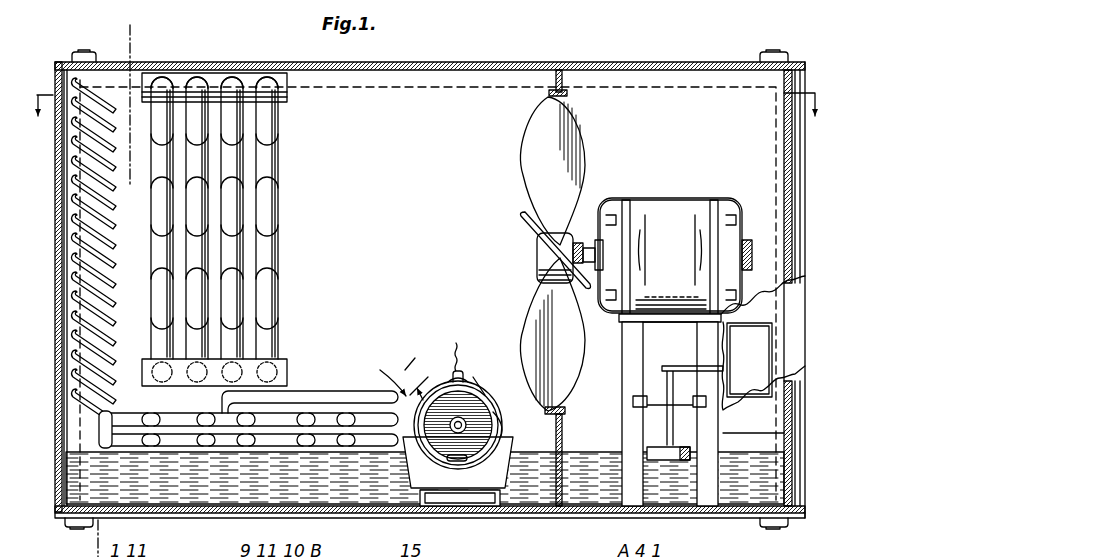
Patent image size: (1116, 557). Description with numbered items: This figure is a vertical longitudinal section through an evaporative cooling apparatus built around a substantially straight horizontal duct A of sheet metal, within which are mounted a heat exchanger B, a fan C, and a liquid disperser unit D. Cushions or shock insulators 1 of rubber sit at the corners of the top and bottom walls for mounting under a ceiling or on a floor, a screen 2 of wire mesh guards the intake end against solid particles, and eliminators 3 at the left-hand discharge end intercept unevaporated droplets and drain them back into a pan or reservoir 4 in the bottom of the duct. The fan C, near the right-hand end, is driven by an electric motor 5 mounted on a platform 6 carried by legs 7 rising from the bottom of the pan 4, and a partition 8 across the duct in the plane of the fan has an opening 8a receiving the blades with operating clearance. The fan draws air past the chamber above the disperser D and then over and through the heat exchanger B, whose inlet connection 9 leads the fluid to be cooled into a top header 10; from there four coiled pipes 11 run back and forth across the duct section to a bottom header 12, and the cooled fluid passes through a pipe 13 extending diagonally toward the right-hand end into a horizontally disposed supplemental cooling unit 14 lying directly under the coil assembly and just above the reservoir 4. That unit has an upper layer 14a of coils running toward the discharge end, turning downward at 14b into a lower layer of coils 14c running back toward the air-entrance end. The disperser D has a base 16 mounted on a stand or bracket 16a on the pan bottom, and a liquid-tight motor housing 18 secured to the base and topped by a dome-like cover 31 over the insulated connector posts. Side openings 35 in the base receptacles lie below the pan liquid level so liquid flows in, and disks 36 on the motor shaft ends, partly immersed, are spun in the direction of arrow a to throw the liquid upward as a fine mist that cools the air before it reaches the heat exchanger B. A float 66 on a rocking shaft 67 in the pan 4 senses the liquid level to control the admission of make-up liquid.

The duct A is at (612, 58).
The heat exchanger B is at (222, 206).
The fan C is at (540, 136).
The liquid disperser unit D is at (458, 425).
The cushions or shock insulators 1 is at (70, 60).
The screen 2 is at (786, 150).
The eliminators 3 is at (140, 42).
The pan or reservoir 4 is at (72, 478).
The electric motor 5 is at (700, 212).
The platform 6 is at (640, 356).
The legs 7 is at (664, 348).
The partition 8 is at (564, 80).
The opening 8a is at (548, 94).
The inlet connection 9 is at (222, 72).
The top header 10 is at (179, 77).
The pipes 11 is at (192, 305).
The bottom header 12 is at (288, 364).
The pipe 13 is at (331, 396).
The supplemental heat exchanger or cooling unit 14 is at (213, 408).
The upper layer of pipe coils 14a is at (290, 416).
The downward connection 14b is at (100, 426).
The lower layer of coils 14c is at (183, 434).
The base 16 is at (468, 493).
The stand or bracket 16a is at (506, 496).
The motor housing 18 is at (402, 380).
The dome-like cover 31 is at (452, 368).
The side openings 35 is at (451, 456).
The disks 36 is at (477, 429).
The float 66 is at (692, 439).
The shaft 67 is at (716, 366).
The arrow a is at (466, 400).